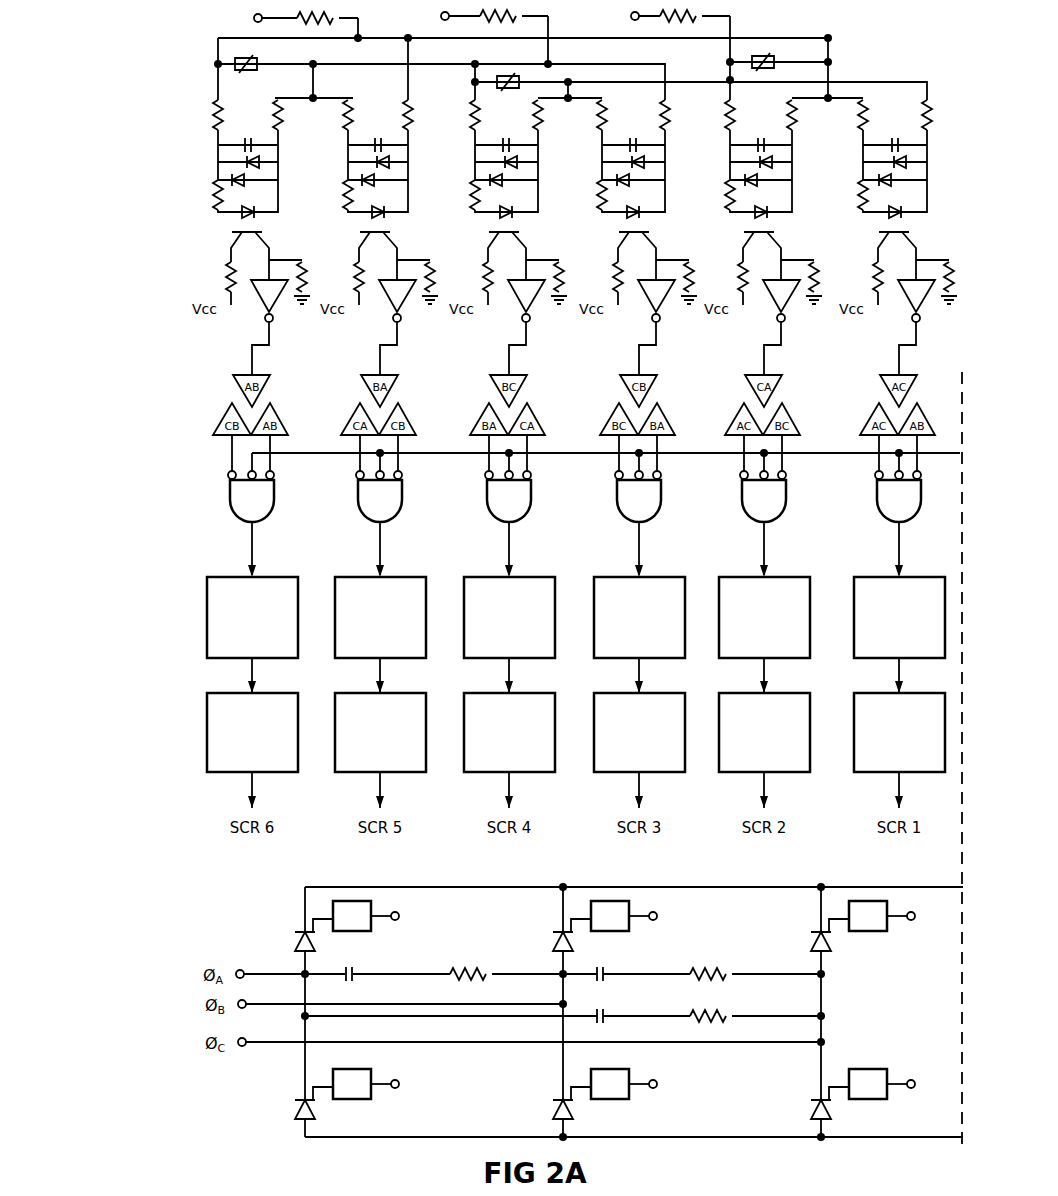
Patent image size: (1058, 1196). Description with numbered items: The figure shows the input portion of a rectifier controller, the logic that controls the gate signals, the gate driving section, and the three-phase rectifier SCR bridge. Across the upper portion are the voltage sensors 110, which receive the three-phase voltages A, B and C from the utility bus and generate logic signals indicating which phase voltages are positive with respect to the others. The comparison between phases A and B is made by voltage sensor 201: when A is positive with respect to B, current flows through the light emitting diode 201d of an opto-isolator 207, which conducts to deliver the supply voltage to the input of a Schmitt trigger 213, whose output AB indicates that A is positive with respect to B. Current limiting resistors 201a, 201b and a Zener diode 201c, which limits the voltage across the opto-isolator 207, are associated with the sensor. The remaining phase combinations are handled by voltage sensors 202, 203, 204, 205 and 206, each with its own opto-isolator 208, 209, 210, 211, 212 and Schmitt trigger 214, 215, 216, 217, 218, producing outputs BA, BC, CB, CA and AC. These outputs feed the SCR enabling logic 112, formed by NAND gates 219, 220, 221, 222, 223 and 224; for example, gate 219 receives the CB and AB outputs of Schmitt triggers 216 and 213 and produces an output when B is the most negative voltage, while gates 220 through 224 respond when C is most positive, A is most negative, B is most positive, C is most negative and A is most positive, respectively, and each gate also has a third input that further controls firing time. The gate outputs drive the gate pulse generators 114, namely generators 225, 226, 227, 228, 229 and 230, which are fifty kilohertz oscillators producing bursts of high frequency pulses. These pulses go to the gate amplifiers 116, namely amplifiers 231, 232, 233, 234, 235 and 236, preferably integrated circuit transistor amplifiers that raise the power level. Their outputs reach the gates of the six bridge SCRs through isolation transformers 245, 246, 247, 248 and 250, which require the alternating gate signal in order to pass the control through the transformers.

The voltage sensors 110 is at (872, 48).
The SCR enabling logic 112 is at (240, 529).
The gate pulse generators 114 is at (223, 675).
The gate amplifiers 116 is at (224, 791).
The voltage sensor 201 is at (276, 154).
The current limiting resistor 201a is at (224, 117).
The current limiting resistor 201b is at (281, 115).
The Zener diode 201c is at (259, 163).
The light emitting diode 201d is at (262, 200).
The voltage sensor 202 is at (411, 189).
The voltage sensor 203 is at (541, 189).
The voltage sensor 204 is at (668, 189).
The voltage sensor 205 is at (796, 190).
The voltage sensor 206 is at (930, 190).
The opto-isolator 207 is at (271, 258).
The opto-isolator 208 is at (399, 258).
The opto-isolator 209 is at (528, 258).
The opto-isolator 210 is at (658, 258).
The opto-isolator 211 is at (783, 258).
The opto-isolator 212 is at (918, 258).
The Schmitt trigger 213 is at (259, 327).
The Schmitt trigger 214 is at (387, 327).
The Schmitt trigger 215 is at (516, 327).
The Schmitt trigger 216 is at (646, 327).
The Schmitt trigger 217 is at (771, 327).
The Schmitt trigger 218 is at (906, 327).
The NAND gate 219 is at (276, 496).
The NAND gate 220 is at (404, 496).
The NAND gate 221 is at (533, 496).
The NAND gate 222 is at (663, 496).
The NAND gate 223 is at (788, 496).
The NAND gate 224 is at (923, 496).
The gate pulse generator 225 is at (270, 632).
The gate pulse generator 226 is at (398, 632).
The gate pulse generator 227 is at (527, 632).
The gate pulse generator 228 is at (657, 632).
The gate pulse generator 229 is at (782, 632).
The gate pulse generator 230 is at (917, 632).
The gate amplifier 231 is at (268, 751).
The gate amplifier 232 is at (396, 751).
The gate amplifier 233 is at (525, 751).
The gate amplifier 234 is at (655, 751).
The gate amplifier 235 is at (780, 751).
The gate amplifier 236 is at (915, 751).
The isolation transformer 245 is at (366, 906).
The isolation transformer 246 is at (627, 906).
The isolation transformer 247 is at (886, 903).
The isolation transformer 248 is at (369, 1071).
The isolation transformer 250 is at (889, 1066).